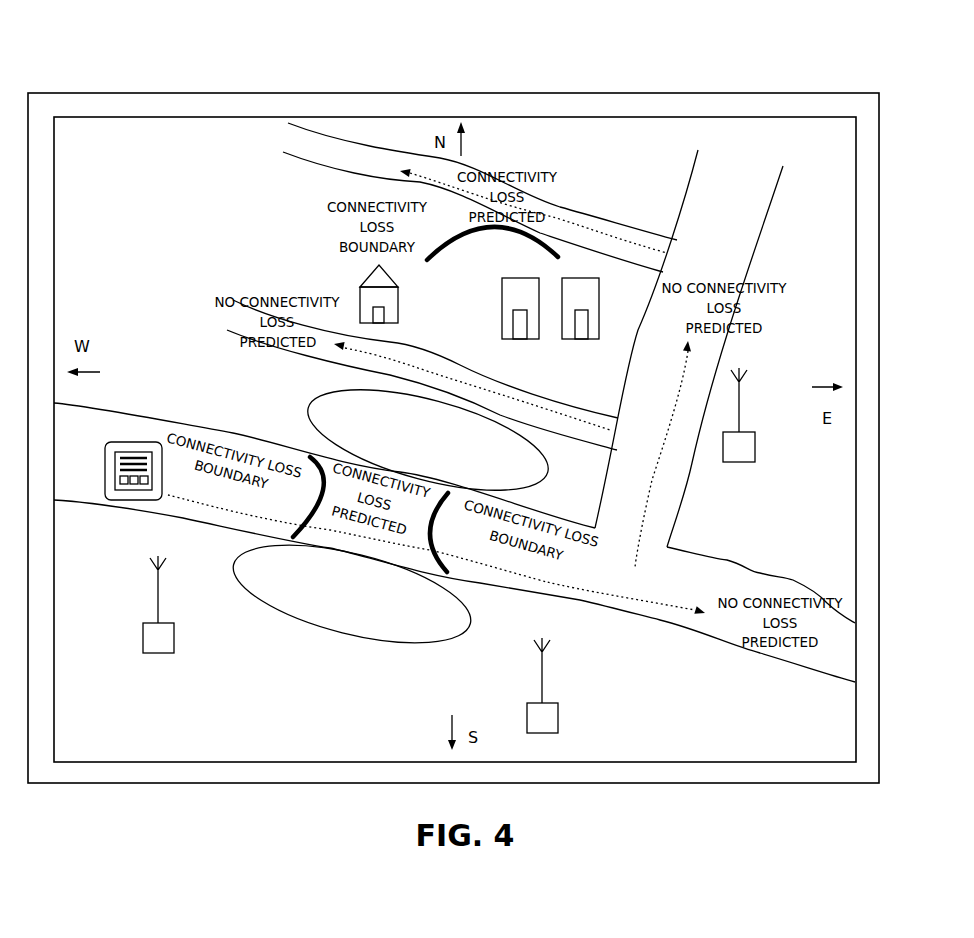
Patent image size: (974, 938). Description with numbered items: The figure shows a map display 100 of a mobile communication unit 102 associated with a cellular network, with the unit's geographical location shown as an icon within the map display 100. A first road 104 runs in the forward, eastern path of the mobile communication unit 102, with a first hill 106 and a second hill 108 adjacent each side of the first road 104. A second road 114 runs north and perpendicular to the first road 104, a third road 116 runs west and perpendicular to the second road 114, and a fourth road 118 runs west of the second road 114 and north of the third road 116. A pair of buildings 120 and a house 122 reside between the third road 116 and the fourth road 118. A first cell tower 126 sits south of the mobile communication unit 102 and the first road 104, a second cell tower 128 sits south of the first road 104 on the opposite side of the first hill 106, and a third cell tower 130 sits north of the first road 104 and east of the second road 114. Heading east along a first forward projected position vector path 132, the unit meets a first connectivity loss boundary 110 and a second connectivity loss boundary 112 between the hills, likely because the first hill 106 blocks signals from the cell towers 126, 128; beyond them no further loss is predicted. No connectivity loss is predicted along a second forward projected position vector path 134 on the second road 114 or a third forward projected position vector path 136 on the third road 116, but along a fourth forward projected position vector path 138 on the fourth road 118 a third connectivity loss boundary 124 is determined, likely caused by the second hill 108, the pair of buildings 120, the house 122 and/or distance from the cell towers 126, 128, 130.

The map display 100 is at (900, 84).
The mobile communication unit 102 is at (120, 442).
The first road 104 is at (210, 427).
The first hill 106 is at (378, 657).
The second hill 108 is at (294, 382).
The first connectivity loss boundary 110 is at (313, 497).
The second connectivity loss boundary 112 is at (440, 548).
The second road 114 is at (767, 228).
The third road 116 is at (420, 345).
The fourth road 118 is at (353, 145).
The pair of buildings 120 is at (559, 362).
The house 122 is at (343, 274).
The third connectivity loss boundary 124 is at (455, 240).
The first cell tower 126 is at (197, 662).
The second cell tower 128 is at (581, 678).
The third cell tower 130 is at (776, 471).
The first forward projected position vector path 132 is at (548, 583).
The second forward projected position vector path 134 is at (643, 557).
The third forward projected position vector path 136 is at (455, 383).
The fourth predicted route 138 is at (612, 235).